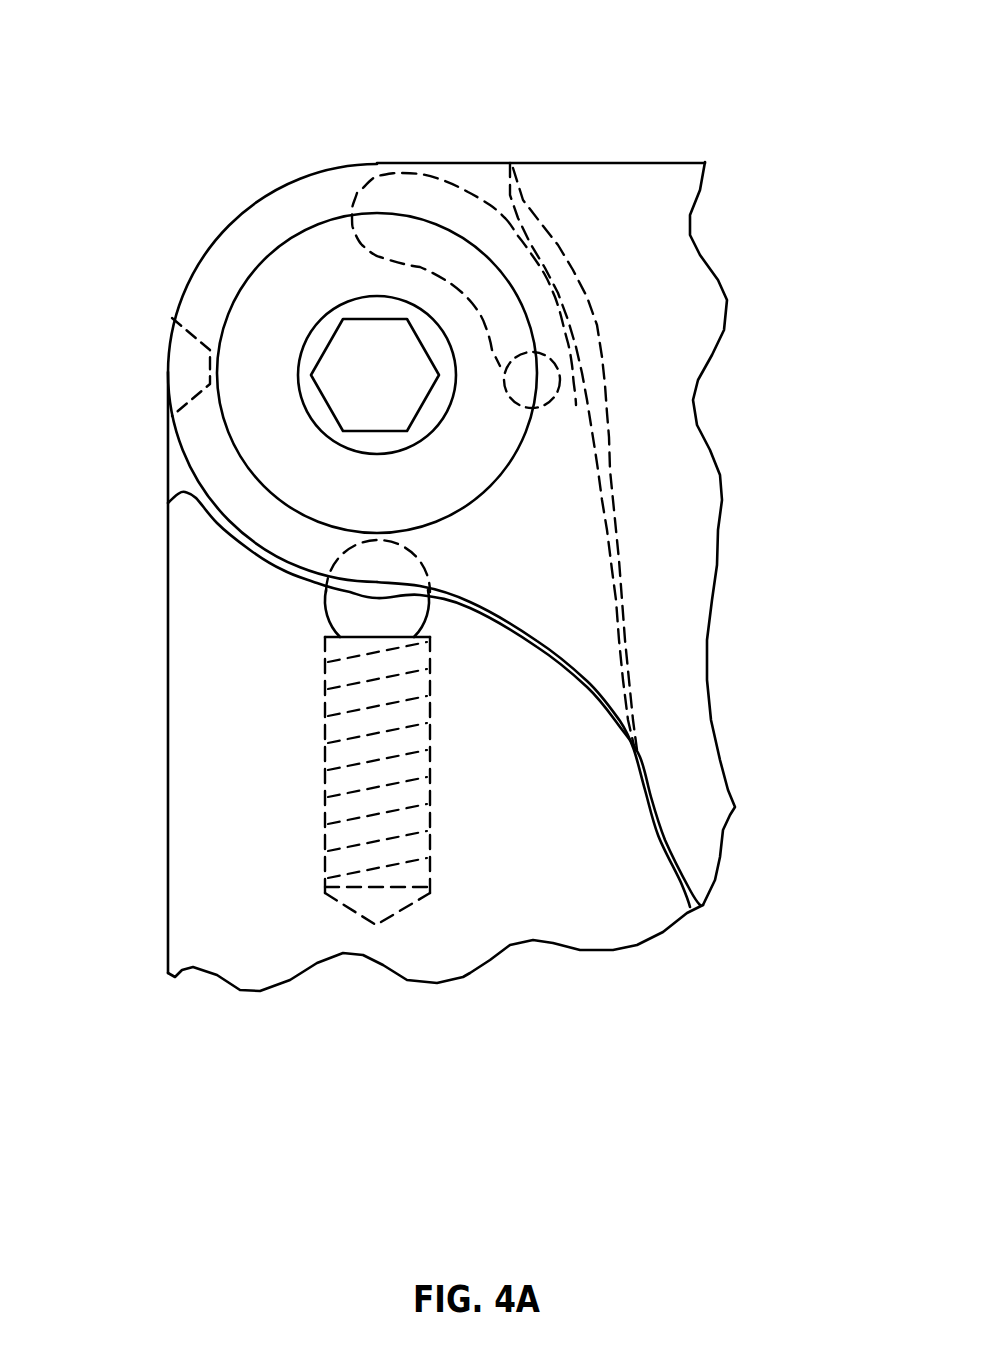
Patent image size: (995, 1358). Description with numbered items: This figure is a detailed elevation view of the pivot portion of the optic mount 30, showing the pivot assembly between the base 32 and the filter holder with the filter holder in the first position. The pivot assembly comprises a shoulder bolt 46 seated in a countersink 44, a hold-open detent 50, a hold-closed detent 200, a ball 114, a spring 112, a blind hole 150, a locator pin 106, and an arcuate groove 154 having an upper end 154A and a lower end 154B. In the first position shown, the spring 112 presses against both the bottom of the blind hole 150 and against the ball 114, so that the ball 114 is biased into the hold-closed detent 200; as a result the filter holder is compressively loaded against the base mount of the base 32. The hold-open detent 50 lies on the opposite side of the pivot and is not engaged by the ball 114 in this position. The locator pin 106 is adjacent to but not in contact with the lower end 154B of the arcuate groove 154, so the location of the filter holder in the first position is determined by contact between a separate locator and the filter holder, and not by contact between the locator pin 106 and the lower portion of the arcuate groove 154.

The tension control apparatus 30 is at (784, 60).
The base 32 is at (222, 1031).
The countersink 44 is at (237, 293).
The shoulder bolt 46 is at (333, 318).
The hold-open detent 50 is at (185, 373).
The locator pin 106 is at (560, 365).
The spring 112 is at (360, 743).
The ball 114 is at (363, 613).
The blind hole 150 is at (377, 927).
The arcuate groove 154 is at (502, 220).
The upper end of arcuate groove 154A is at (357, 193).
The lower end of arcuate groove 154B is at (570, 393).
The hold-closed detent 200 is at (422, 563).